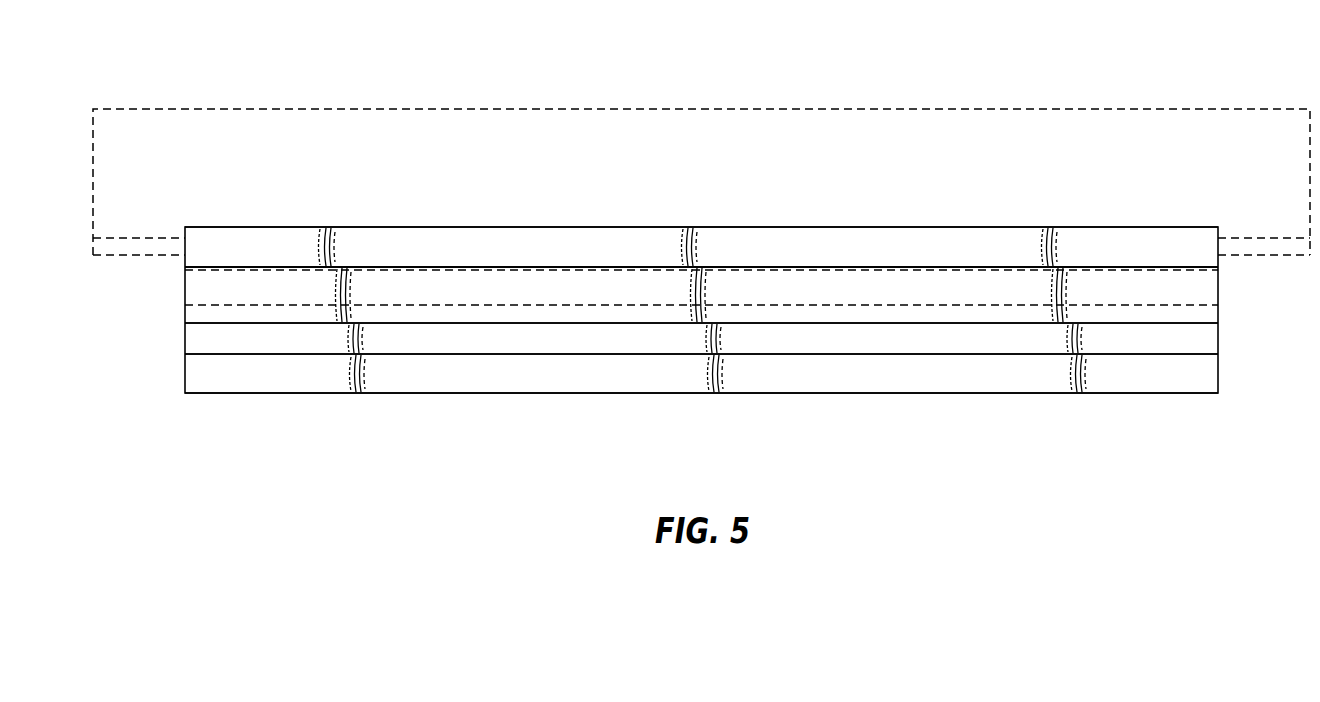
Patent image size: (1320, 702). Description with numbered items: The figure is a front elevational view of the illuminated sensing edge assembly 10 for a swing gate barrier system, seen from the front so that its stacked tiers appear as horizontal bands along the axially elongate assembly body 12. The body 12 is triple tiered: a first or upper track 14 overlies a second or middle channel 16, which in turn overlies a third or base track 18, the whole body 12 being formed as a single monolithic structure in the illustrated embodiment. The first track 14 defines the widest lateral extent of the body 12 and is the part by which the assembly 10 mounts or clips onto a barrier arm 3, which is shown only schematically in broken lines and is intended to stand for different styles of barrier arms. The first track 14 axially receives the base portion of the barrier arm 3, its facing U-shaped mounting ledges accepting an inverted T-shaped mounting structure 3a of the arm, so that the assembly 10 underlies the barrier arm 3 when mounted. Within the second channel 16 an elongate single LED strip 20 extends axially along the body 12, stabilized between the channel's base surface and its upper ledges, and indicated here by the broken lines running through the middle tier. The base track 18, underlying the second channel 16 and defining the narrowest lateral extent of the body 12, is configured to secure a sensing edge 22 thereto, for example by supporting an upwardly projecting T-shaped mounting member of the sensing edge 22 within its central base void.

The barrier arm 3 is at (1003, 94).
The inverted T-shaped mounting structure 3a is at (1253, 257).
The illuminated sensing edge assembly 10 is at (642, 172).
The assembly body 12 is at (487, 289).
The first track 14 is at (378, 230).
The second channel 16 is at (582, 289).
The base track 18 is at (820, 346).
The LED strip 20 is at (183, 288).
The sensing edge 22 is at (925, 391).